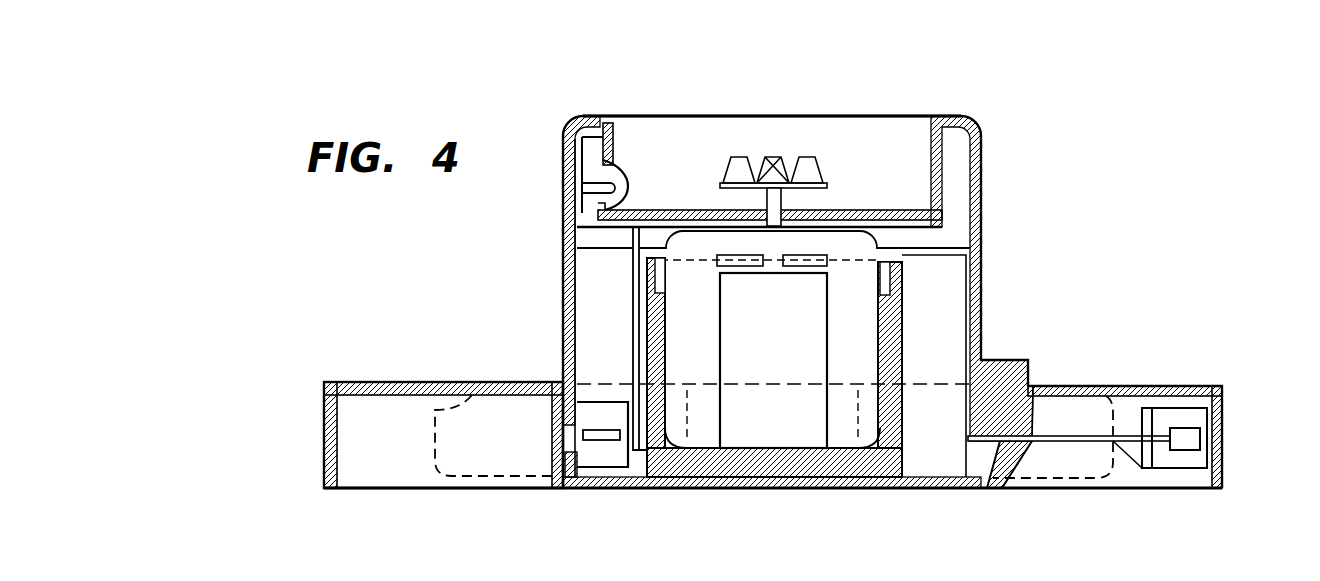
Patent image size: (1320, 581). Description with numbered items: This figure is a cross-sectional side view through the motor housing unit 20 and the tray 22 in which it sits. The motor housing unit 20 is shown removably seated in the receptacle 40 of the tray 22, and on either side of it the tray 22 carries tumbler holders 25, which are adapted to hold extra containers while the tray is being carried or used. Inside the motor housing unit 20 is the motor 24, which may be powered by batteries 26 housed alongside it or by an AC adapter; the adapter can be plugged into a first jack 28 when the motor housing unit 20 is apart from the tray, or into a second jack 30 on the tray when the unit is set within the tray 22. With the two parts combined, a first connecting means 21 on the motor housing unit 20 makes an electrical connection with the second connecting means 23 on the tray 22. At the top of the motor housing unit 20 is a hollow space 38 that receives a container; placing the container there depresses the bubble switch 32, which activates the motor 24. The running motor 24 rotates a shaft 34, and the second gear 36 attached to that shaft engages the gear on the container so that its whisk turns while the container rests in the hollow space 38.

The motor housing unit 20 is at (563, 263).
The first connecting means 21 is at (1010, 470).
The tray 22 is at (322, 428).
The second connecting means 23 is at (1027, 415).
The motor 24 is at (903, 278).
The tumbler holders 25 is at (473, 383).
The batteries 26 is at (773, 422).
The first jack 28 is at (602, 455).
The second jack 30 is at (1225, 437).
The bubble switch 32 is at (622, 180).
The shaft 34 is at (781, 206).
The second gear 36 is at (777, 183).
The hollow space 38 is at (897, 148).
The receptacle 40 is at (553, 438).